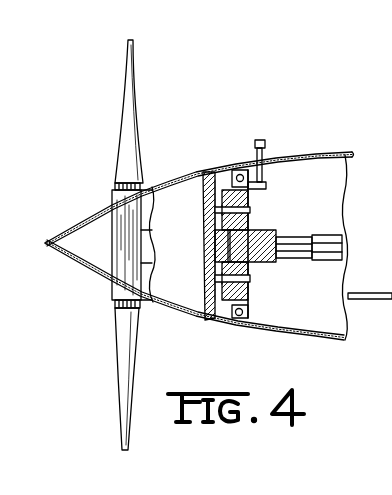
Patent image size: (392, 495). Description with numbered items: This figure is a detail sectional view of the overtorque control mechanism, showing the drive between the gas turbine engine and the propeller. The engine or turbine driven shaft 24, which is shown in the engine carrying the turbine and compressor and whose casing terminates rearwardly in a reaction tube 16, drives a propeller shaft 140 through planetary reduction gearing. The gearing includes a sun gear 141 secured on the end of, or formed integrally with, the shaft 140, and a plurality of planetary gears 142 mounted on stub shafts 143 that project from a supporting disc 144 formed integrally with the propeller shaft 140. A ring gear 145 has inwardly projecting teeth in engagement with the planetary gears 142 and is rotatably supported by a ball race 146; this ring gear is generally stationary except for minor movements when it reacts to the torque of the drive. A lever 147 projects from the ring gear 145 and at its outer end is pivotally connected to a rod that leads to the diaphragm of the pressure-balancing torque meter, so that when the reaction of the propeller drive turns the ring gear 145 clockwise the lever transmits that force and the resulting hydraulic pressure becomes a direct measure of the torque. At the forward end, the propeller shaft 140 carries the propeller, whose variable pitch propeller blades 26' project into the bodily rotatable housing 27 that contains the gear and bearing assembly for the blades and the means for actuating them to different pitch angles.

The reaction tube 16 is at (374, 290).
The shaft 24 is at (332, 248).
The variable pitch propeller blades 26' is at (99, 245).
The bodily rotatable housing 27 is at (72, 248).
The propeller shaft 140 is at (148, 250).
The sun gear 141 is at (254, 240).
The planetary gears 142 is at (250, 290).
The stub shafts 143 is at (250, 278).
The supporting disc 144 is at (210, 310).
The ring gear 145 is at (248, 310).
The ball race 146 is at (240, 173).
The lever 147 is at (268, 180).